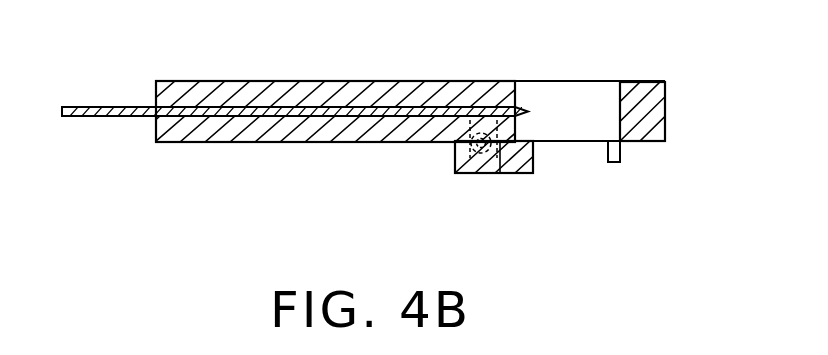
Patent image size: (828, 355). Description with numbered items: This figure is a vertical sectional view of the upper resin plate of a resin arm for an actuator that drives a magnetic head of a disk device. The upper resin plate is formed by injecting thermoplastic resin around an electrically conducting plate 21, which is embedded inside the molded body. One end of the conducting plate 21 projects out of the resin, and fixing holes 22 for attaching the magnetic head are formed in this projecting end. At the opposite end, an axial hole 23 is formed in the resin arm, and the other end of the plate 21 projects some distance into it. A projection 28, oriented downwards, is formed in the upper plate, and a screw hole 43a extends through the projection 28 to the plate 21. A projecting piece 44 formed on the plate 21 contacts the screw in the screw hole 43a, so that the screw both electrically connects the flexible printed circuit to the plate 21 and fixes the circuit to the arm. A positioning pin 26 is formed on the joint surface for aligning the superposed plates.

The electrically conducting plate 21 is at (237, 113).
The fixing holes 22 is at (89, 118).
The axial hole 23 is at (614, 96).
The projection 28 is at (455, 162).
The positioning pin 26 is at (532, 154).
The projecting piece 44 is at (454, 120).
The screw hole 43a is at (482, 176).